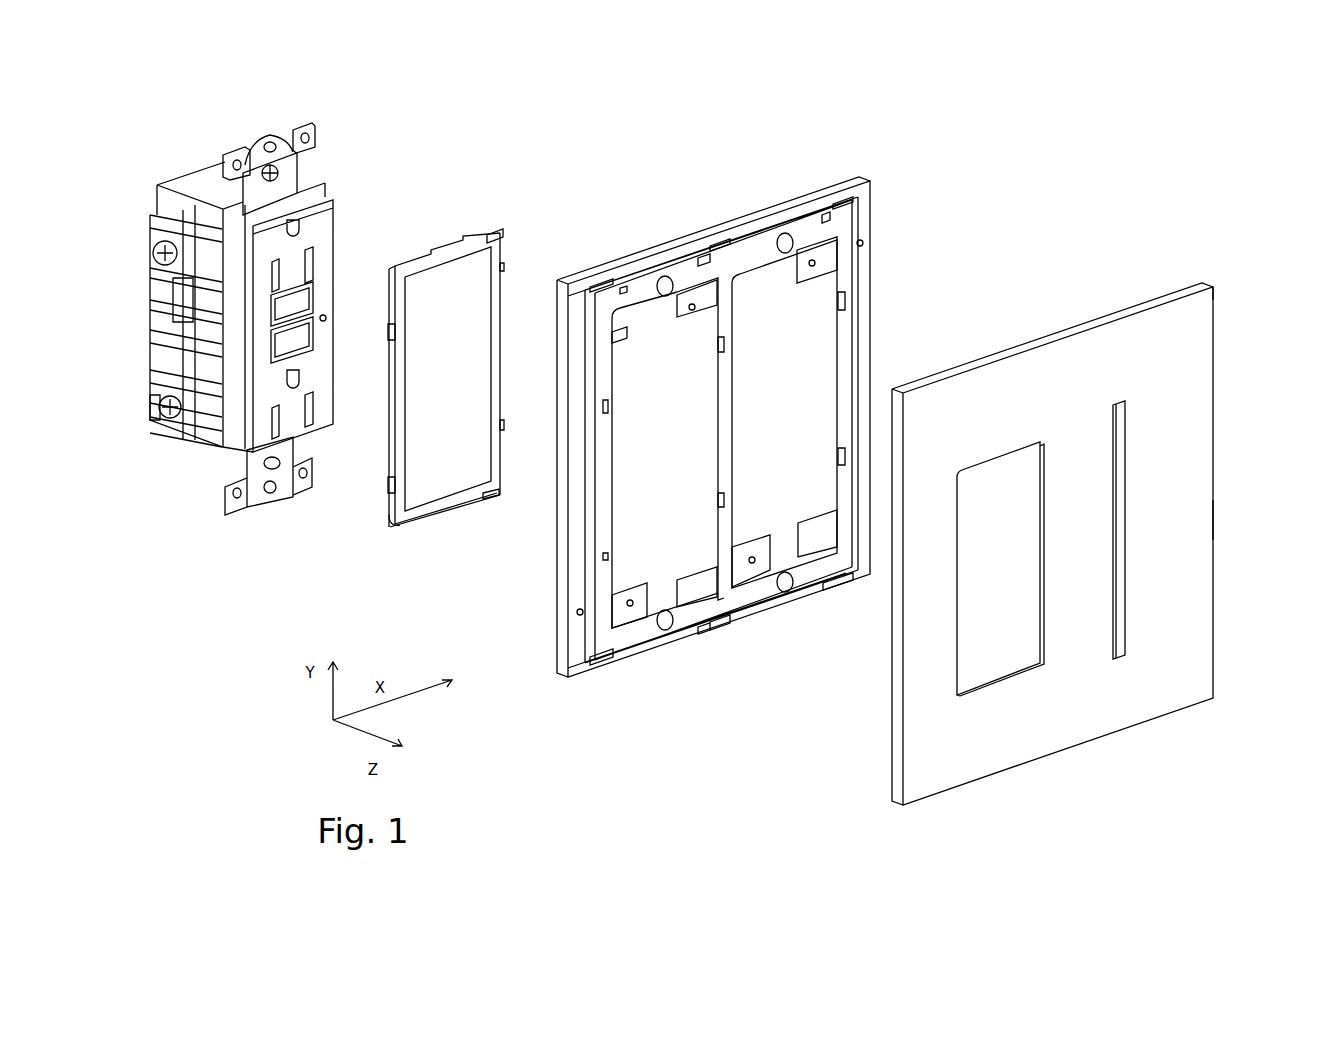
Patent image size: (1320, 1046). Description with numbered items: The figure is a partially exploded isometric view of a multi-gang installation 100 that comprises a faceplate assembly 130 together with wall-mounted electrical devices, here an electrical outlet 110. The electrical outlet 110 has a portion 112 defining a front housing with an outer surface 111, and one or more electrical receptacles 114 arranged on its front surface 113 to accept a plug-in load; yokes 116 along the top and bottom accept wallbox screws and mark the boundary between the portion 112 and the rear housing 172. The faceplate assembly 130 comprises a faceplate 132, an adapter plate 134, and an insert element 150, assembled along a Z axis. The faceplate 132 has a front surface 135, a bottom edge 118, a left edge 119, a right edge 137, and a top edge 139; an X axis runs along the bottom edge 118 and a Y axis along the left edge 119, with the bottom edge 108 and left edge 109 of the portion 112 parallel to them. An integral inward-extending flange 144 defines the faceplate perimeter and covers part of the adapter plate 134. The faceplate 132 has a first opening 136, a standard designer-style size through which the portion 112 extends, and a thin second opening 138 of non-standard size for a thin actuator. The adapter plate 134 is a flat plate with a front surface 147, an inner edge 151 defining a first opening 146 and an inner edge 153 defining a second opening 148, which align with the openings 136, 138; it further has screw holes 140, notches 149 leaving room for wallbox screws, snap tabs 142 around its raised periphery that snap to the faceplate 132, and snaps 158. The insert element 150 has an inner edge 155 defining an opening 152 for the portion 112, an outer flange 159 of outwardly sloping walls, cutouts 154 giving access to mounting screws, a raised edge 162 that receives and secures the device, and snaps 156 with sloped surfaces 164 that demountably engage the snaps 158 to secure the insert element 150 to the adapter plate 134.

The multi-gang installation 100 is at (1111, 101).
The bottom edge of the portion 108 is at (322, 433).
The left edge of the portion 109 is at (210, 433).
The electrical outlet 110 is at (198, 541).
The outer surface 111 is at (163, 422).
The portion 112 is at (242, 252).
The front surface 113 is at (183, 418).
The electrical receptacles 114 is at (330, 256).
The yokes 116 is at (300, 190).
The bottom edge 118 is at (1150, 722).
The left edge 119 is at (900, 742).
The faceplate assembly 130 is at (969, 136).
The faceplate 132 is at (1048, 298).
The adapter plate 134 is at (775, 667).
The front surface 135 is at (1012, 743).
The first opening 136 is at (968, 671).
The right edge 137 is at (1217, 518).
The second opening 138 is at (1121, 395).
The top edge 139 is at (1203, 287).
The screw holes 140 is at (642, 280).
The snap tabs 142 is at (602, 273).
The flange 144 is at (987, 360).
The first opening 146 is at (621, 586).
The front surface 147 is at (818, 233).
The second opening 148 is at (828, 369).
The notches 149 is at (655, 300).
The insert element 150 is at (433, 555).
The inner edge 151 is at (578, 501).
The opening 152 is at (466, 284).
The inner edge 153 is at (800, 243).
The cutouts 154 is at (441, 251).
The inner edge 155 is at (493, 348).
The snaps 156 is at (491, 231).
The snaps 158 is at (850, 448).
The outer flange 159 is at (392, 503).
The raised edge 162 is at (860, 300).
The sloped surfaces 164 is at (390, 487).
The rear housing 172 is at (218, 152).